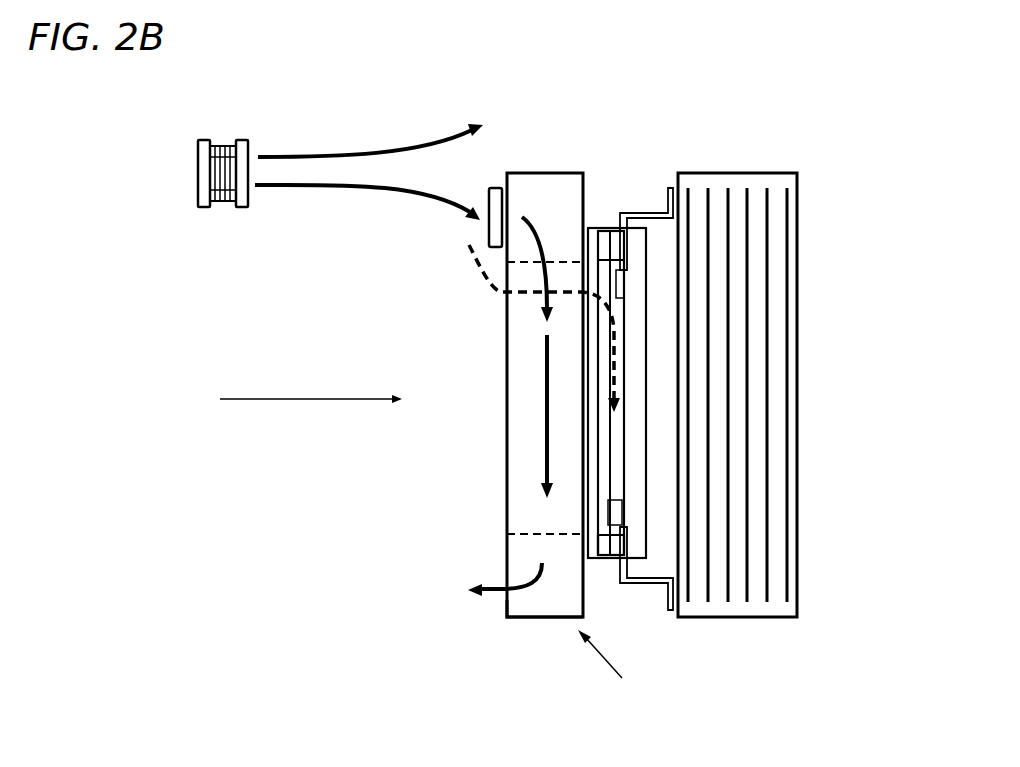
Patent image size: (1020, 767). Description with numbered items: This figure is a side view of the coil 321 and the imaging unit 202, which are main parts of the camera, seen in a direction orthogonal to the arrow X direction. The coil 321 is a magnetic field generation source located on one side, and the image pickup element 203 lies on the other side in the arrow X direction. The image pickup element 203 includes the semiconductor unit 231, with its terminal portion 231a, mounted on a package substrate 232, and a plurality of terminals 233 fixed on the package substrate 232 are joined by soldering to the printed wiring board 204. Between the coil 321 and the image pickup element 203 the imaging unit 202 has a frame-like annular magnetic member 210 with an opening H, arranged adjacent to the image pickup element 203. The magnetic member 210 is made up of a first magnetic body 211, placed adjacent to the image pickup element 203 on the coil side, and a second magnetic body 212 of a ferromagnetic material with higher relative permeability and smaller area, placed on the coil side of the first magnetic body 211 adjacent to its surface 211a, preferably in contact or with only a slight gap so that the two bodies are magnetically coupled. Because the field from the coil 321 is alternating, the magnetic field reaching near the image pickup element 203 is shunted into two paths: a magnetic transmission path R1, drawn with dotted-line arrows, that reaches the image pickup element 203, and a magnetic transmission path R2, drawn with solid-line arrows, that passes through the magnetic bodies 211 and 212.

The coil 321 is at (220, 138).
The imaging unit 202 is at (787, 93).
The image pickup element 203 is at (672, 162).
The printed wiring board 204 is at (733, 173).
The magnetic member 210 is at (614, 674).
The first magnetic body 211 is at (537, 182).
The surface 211a is at (500, 602).
The second magnetic body 212 is at (495, 186).
The semiconductor unit 231 is at (603, 296).
The electrode terminal 231a is at (596, 553).
The package substrate 232 is at (637, 548).
The terminals 233 is at (667, 612).
The arrow X direction X is at (322, 397).
The opening H is at (523, 430).
The magnetic transmission path R1 is at (498, 298).
The magnetic transmission path R2 is at (542, 387).